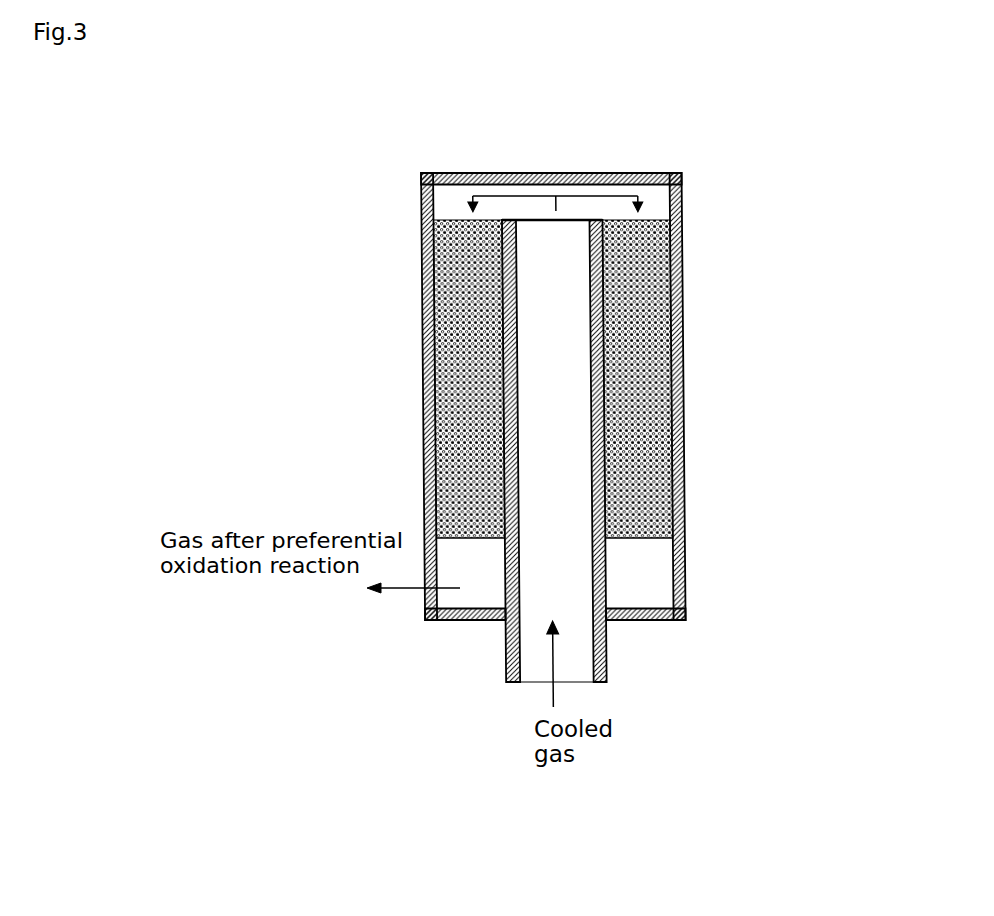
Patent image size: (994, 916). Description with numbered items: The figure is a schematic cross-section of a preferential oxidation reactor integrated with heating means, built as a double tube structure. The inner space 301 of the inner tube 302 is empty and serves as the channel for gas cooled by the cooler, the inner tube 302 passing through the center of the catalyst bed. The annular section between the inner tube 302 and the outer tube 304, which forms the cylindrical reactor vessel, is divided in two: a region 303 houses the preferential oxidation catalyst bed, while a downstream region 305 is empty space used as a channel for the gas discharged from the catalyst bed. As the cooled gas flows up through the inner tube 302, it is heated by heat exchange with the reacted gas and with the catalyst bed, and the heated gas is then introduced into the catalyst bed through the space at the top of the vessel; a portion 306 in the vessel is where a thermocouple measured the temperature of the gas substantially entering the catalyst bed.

The inner space 301 is at (565, 290).
The inner tube 302 is at (607, 342).
The region of the annular section 303 is at (607, 428).
The outer tube 304 is at (683, 478).
The region of the annular section 305 is at (648, 579).
The portion in the vessel 306 is at (659, 190).